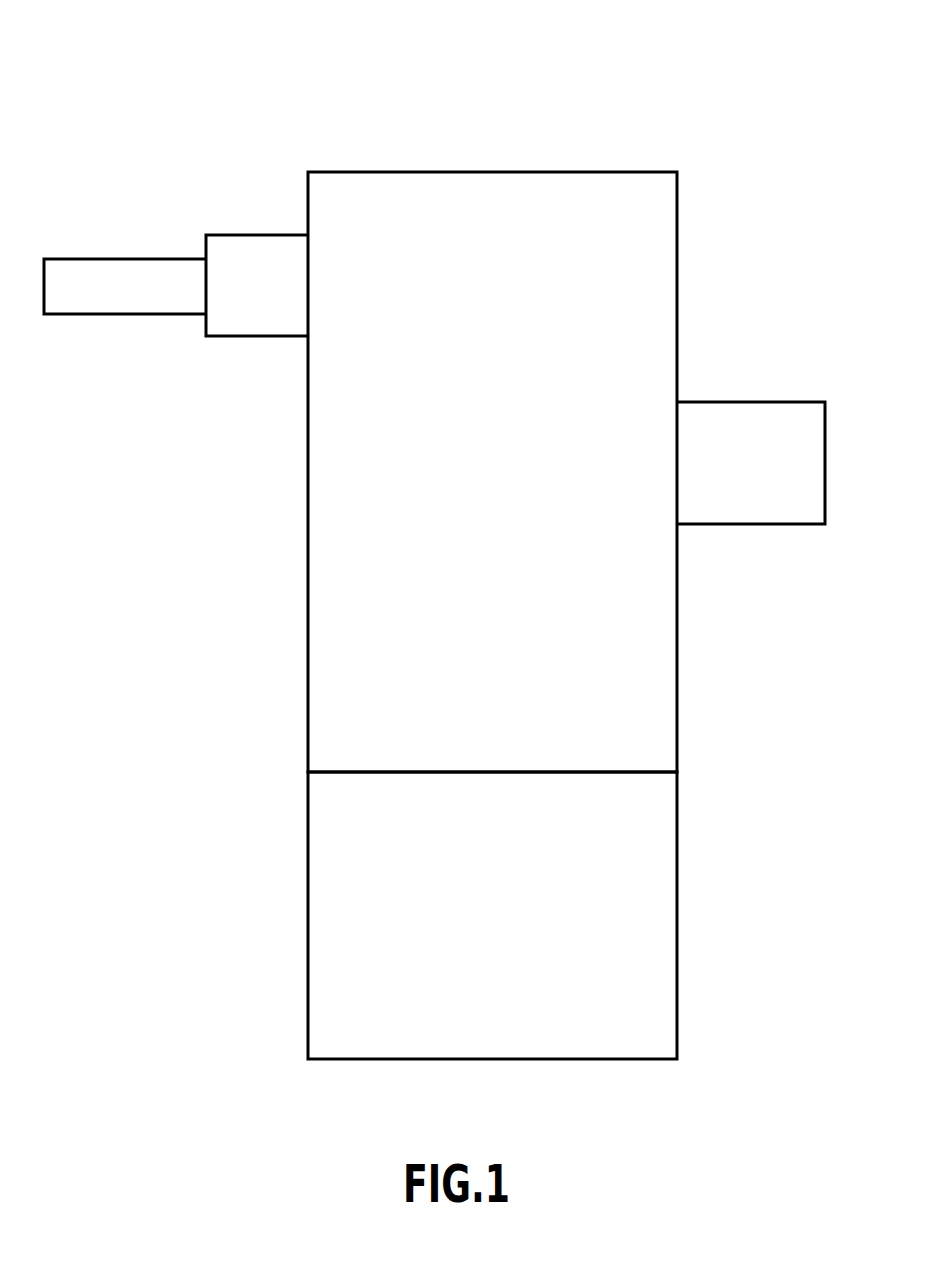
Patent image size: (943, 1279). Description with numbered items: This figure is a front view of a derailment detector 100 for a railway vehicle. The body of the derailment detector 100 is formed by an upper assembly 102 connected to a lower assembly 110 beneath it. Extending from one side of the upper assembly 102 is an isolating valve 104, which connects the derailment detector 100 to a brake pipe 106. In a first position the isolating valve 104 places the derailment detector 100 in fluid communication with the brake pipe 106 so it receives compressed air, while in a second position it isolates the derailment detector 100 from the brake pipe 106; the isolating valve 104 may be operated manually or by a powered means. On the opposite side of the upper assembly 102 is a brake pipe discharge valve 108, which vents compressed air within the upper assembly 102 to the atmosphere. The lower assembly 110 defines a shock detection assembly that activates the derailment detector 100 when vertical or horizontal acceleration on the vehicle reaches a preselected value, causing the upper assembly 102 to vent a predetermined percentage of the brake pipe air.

The derailment detector 100 is at (515, 66).
The upper assembly 102 is at (678, 262).
The isolating valve 104 is at (252, 337).
The brake pipe 106 is at (122, 315).
The brake pipe discharge valve 108 is at (745, 525).
The lower assembly 110 is at (678, 892).